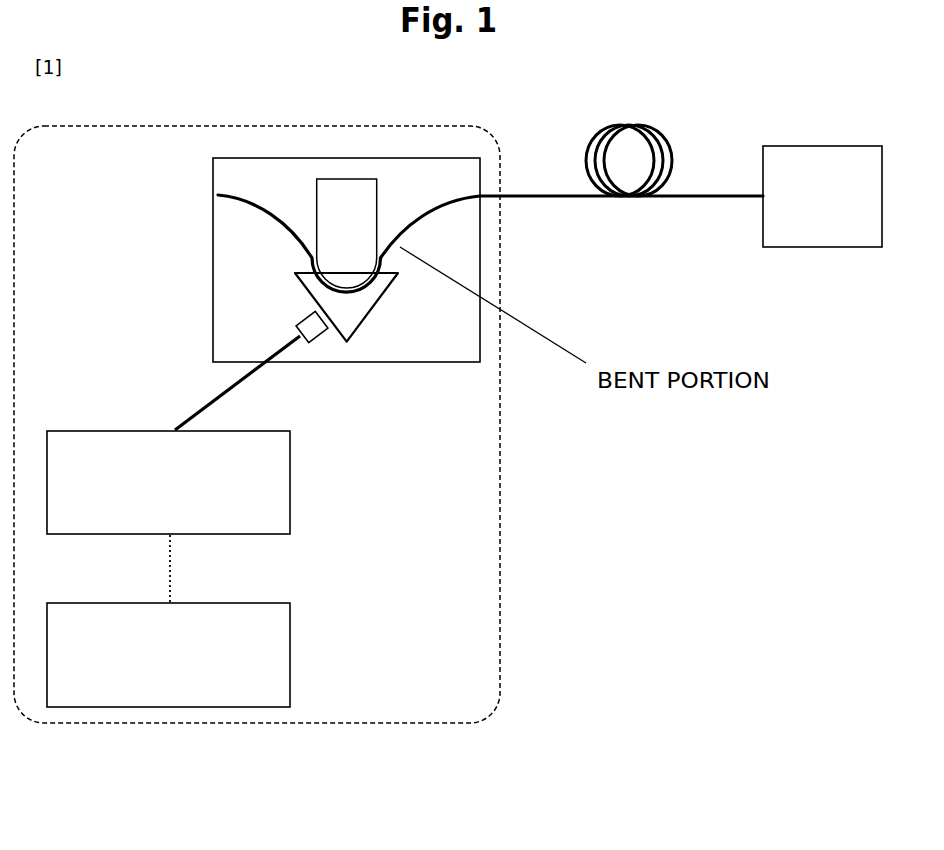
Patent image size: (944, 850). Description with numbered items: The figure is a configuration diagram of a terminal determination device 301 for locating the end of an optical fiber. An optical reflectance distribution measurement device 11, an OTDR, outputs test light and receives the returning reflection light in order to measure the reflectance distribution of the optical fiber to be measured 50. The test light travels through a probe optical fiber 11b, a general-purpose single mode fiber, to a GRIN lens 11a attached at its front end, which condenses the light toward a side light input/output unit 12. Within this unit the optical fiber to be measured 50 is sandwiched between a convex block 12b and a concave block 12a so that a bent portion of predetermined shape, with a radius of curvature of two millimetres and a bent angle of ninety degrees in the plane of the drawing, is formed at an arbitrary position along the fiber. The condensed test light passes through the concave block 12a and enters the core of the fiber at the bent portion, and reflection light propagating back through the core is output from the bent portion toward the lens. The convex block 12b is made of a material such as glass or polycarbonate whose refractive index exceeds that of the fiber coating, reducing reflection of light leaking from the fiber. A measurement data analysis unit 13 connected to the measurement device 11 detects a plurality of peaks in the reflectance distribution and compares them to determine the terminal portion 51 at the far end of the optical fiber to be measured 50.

The terminal determination device 301 is at (315, 126).
The side light input/output unit 12 is at (213, 273).
The concave block 12a is at (378, 308).
The convex block 12b is at (377, 193).
The optical reflectance distribution measurement device 11 is at (290, 497).
The GRIN lens 11a is at (317, 338).
The probe optical fiber 11b is at (203, 405).
The measurement data analysis unit 13 is at (290, 662).
The optical fiber to be measured 50 is at (647, 125).
The terminal portion 51 is at (803, 146).